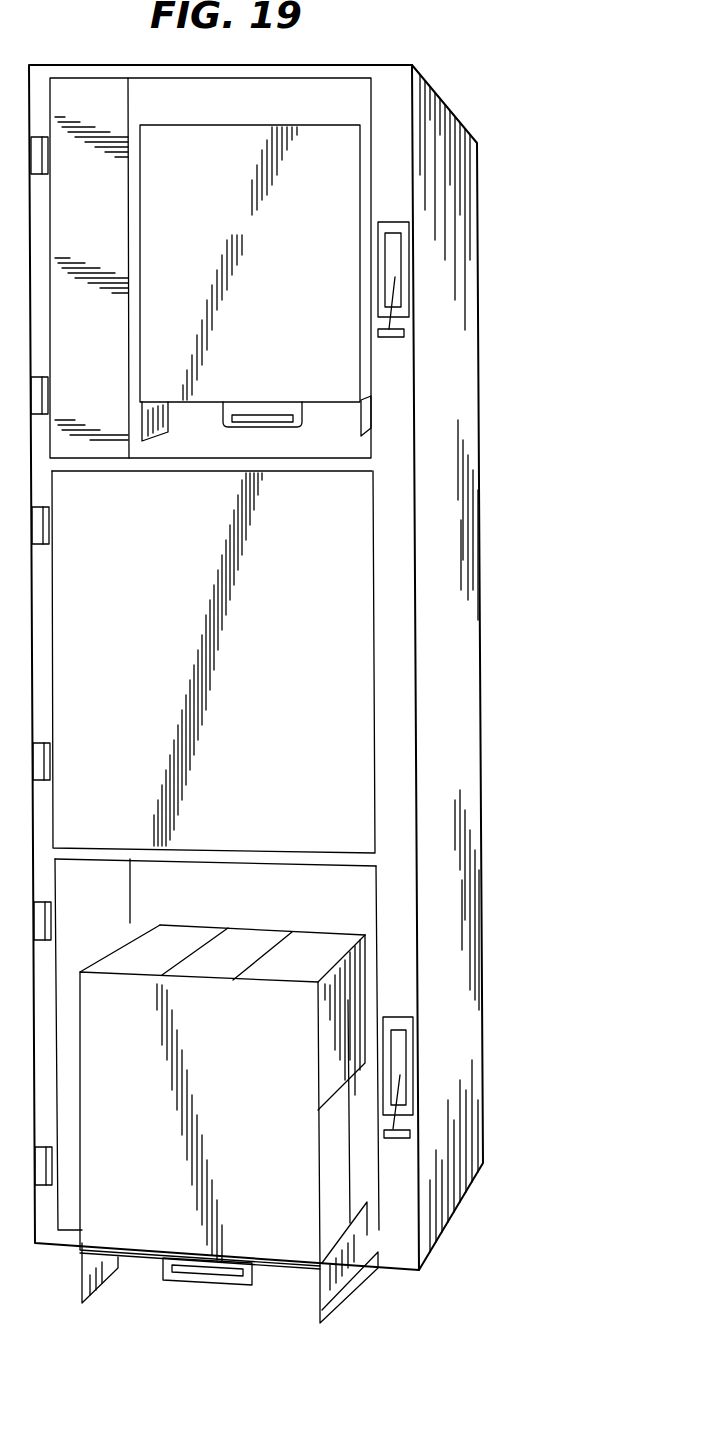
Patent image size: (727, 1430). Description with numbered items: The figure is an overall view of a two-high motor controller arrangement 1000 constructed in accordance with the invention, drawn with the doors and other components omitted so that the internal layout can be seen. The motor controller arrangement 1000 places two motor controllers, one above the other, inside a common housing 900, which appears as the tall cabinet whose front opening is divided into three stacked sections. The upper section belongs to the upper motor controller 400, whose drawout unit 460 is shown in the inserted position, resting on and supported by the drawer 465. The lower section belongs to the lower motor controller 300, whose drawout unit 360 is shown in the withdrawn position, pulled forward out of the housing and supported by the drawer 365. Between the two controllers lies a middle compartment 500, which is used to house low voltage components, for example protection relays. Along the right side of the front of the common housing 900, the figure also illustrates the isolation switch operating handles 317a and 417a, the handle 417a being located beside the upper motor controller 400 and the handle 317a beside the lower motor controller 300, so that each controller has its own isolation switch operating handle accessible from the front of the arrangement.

The two-high motor controller arrangement 1000 is at (551, 1256).
The common housing 900 is at (470, 893).
The upper motor controller 400 is at (503, 266).
The drawout unit 460 is at (264, 231).
The drawer 465 is at (153, 430).
The isolation switch operating handle 417a is at (405, 333).
The middle compartment 500 is at (500, 655).
The lower motor controller 300 is at (500, 1103).
The drawout unit 360 is at (225, 1063).
The drawer 365 is at (108, 1263).
The isolation switch operating handle 317a is at (410, 1137).